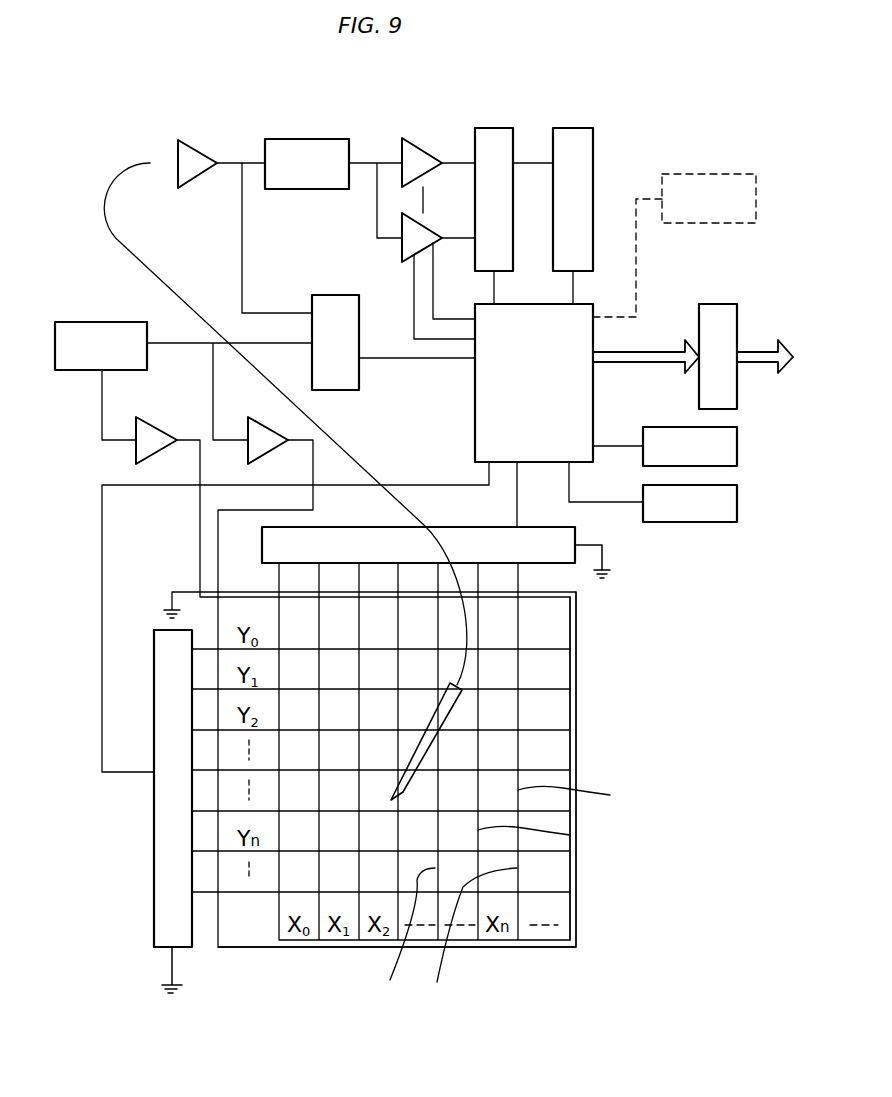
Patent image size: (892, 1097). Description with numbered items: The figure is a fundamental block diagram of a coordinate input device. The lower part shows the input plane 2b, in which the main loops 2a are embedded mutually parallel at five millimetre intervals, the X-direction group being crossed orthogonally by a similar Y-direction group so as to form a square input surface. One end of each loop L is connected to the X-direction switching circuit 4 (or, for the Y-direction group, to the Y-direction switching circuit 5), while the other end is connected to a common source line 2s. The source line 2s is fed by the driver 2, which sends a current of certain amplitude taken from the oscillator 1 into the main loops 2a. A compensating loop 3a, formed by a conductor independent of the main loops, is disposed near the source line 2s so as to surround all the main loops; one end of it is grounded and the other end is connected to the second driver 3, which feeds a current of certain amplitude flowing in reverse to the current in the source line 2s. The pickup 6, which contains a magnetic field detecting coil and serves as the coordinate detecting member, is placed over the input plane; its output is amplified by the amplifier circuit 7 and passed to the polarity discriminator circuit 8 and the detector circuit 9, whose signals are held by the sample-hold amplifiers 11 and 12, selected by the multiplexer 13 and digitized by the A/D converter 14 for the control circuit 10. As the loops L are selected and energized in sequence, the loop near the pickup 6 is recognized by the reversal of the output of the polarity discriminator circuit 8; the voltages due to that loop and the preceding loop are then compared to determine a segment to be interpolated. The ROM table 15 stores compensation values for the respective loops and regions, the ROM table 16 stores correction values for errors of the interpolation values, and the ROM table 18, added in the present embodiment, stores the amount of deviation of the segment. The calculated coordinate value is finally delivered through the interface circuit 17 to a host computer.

The oscillator 1 is at (100, 303).
The driver 2 is at (152, 458).
The driver 3 is at (264, 458).
The X-direction switching circuit 4 is at (458, 527).
The Y-direction switching circuit 5 is at (154, 884).
The pickup 6 is at (443, 707).
The amplifier circuit 7 is at (196, 150).
The polarity discriminator circuit 8 is at (333, 295).
The detector circuit 9 is at (308, 140).
The control circuit 10 is at (475, 426).
The sample-hold amplifier 11 is at (418, 148).
The sample-hold amplifier 12 is at (430, 230).
The multiplexer 13 is at (492, 128).
The A/D converter 14 is at (572, 128).
The ROM table 15 is at (737, 445).
The ROM table 16 is at (737, 502).
The interface circuit 17 is at (712, 304).
The ROM table 18 is at (715, 174).
The main loops 2a is at (518, 625).
The input plane 2b is at (558, 907).
The source line 2s is at (570, 745).
The compensating loop 3a is at (576, 667).
The loop L is at (502, 894).